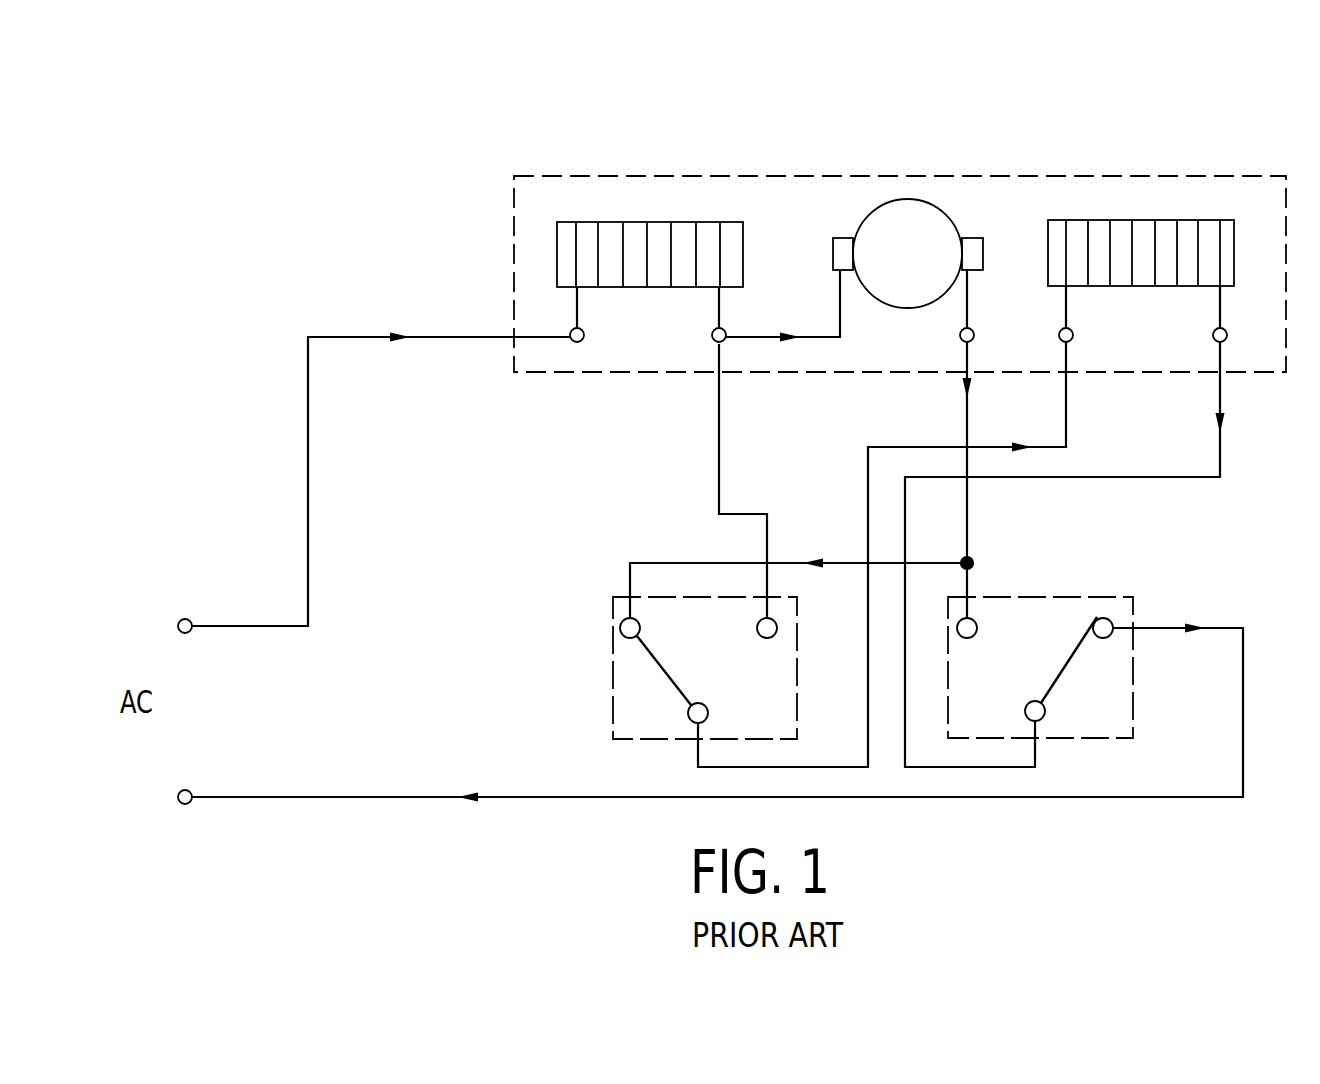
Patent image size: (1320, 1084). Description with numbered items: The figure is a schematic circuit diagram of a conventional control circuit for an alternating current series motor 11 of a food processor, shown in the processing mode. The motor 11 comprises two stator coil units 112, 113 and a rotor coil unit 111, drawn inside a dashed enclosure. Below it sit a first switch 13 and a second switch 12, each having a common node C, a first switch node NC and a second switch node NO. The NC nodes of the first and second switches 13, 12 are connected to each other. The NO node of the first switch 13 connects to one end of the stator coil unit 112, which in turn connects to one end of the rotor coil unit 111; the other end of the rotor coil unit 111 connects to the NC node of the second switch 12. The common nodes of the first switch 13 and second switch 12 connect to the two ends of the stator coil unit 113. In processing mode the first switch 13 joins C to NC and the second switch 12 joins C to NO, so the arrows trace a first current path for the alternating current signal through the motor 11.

The alternating current series motor 11 is at (573, 176).
The rotor coil unit 111 is at (905, 199).
The stator coil unit 112 is at (656, 222).
The stator coil unit 113 is at (1100, 220).
The second switch 12 is at (1042, 597).
The first switch 13 is at (613, 694).